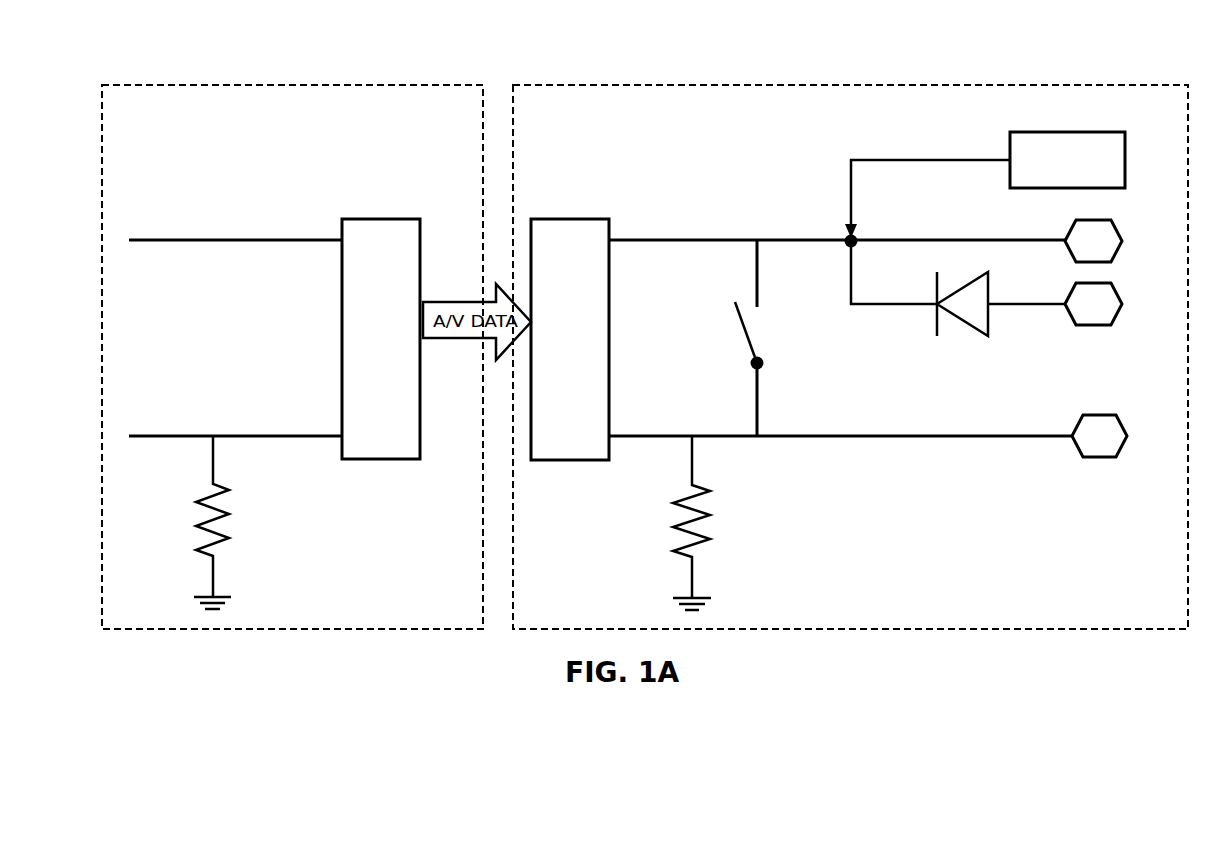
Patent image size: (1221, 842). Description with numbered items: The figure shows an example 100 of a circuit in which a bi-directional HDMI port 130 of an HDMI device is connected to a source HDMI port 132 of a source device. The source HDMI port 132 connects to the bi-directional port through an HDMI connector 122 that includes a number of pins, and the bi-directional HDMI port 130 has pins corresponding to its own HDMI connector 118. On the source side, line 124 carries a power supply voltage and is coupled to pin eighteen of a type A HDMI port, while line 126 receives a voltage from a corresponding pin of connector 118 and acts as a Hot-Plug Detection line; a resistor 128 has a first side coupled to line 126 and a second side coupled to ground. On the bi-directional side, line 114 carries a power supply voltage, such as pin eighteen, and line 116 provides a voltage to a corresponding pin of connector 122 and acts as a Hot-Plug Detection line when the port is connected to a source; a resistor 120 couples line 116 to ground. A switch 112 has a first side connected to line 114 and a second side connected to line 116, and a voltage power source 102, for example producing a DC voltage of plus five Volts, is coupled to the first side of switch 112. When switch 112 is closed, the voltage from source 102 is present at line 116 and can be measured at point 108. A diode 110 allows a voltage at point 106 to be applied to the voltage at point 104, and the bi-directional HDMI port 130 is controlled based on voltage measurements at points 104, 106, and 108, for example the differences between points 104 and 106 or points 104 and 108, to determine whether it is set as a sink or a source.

The example circuit 100 is at (687, 57).
The voltage power source 102 is at (1126, 158).
The point 104 is at (1093, 241).
The point 106 is at (1093, 304).
The point 108 is at (1099, 436).
The diode 110 is at (935, 320).
The switch 112 is at (768, 345).
The line 114 is at (715, 240).
The line 116 is at (798, 436).
The HDMI connector 118 is at (609, 228).
The resistor 120 is at (705, 534).
The HDMI connector 122 is at (420, 230).
The line 124 is at (135, 240).
The line 126 is at (135, 436).
The resistor 128 is at (227, 534).
The bi-directional HDMI port 130 is at (522, 84).
The source HDMI port 132 is at (113, 84).